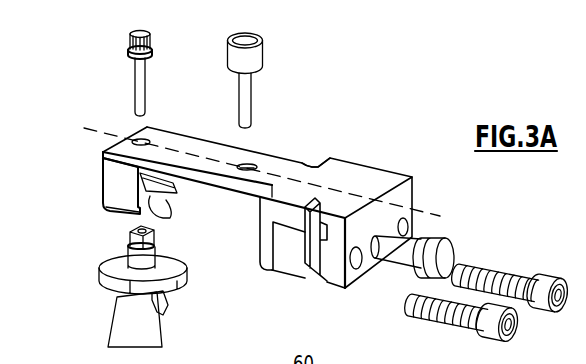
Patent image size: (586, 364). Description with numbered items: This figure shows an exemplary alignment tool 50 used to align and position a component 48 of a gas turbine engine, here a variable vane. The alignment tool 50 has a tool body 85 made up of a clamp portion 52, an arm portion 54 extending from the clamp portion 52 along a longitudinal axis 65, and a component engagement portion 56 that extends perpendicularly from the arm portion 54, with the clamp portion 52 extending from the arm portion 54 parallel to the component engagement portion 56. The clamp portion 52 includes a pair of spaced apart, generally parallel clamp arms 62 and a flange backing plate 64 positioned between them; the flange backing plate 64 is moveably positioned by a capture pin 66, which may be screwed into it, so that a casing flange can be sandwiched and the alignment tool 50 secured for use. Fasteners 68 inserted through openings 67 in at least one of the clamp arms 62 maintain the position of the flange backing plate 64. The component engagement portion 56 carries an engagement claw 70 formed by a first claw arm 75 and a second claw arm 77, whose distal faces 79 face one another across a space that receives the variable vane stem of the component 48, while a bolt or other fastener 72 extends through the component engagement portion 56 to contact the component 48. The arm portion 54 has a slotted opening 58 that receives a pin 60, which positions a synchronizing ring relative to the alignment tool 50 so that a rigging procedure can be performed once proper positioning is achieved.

The component 48 is at (105, 319).
The alignment tool 50 is at (379, 105).
The clamp portion 52 is at (356, 288).
The arm portion 54 is at (257, 153).
The component engagement portion 56 is at (118, 190).
The slotted opening 58 is at (246, 172).
The pin 60 is at (260, 53).
The clamp arms 62 is at (265, 253).
The flange backing plate 64 is at (298, 275).
The longitudinal axis 65 is at (167, 148).
The capture pin 66 is at (444, 229).
The openings 67 is at (409, 222).
The fasteners 68 is at (513, 282).
The engagement claw 70 is at (112, 176).
The fastener 72 is at (145, 70).
The first claw arm 75 is at (127, 204).
The second claw arm 77 is at (172, 186).
The distal face 79 is at (158, 204).
The tool body 85 is at (309, 157).